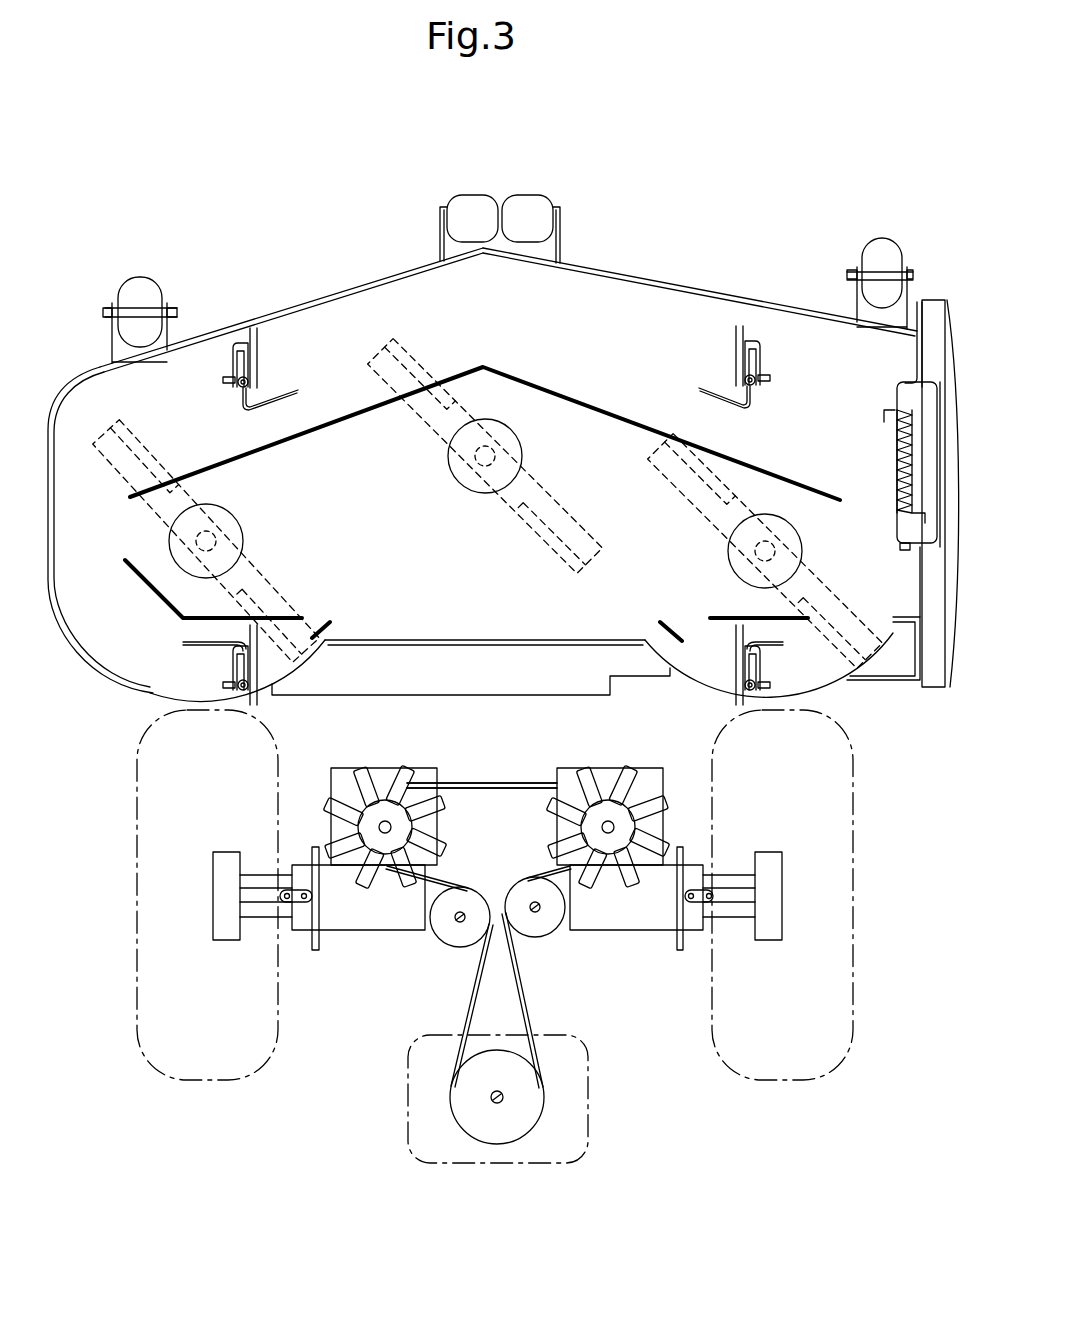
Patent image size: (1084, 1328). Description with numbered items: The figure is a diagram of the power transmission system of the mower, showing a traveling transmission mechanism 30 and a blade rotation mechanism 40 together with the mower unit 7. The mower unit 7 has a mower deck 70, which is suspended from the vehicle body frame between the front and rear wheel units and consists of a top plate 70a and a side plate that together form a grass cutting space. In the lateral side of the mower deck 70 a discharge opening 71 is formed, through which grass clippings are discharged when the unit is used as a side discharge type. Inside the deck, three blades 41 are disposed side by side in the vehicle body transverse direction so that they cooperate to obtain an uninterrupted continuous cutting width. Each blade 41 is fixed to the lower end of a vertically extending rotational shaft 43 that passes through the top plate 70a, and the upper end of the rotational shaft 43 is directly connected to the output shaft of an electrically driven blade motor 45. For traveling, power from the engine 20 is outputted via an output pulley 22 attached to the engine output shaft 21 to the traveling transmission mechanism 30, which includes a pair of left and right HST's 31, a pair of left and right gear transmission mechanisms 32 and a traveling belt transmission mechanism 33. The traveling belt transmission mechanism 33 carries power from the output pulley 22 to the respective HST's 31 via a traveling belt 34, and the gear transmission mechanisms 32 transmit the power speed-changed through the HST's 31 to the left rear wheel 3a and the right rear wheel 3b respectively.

The mower unit 7 is at (309, 278).
The mower deck 70 is at (599, 253).
The top plate 70a is at (667, 298).
The discharge opening 71 is at (941, 289).
The blade 41 is at (125, 437).
The blade rotation mechanism 40 is at (515, 400).
The rotational shaft 43 is at (222, 535).
The electrically driven blade motor 45 is at (245, 537).
The traveling transmission mechanism 30 is at (506, 777).
The HST 31 is at (375, 770).
The traveling belt 34 is at (453, 783).
The traveling belt transmission mechanism 33 is at (698, 805).
The gear transmission mechanism 32 is at (352, 922).
The engine output shaft 21 is at (494, 1096).
The output pulley 22 is at (525, 1102).
The engine 20 is at (507, 1163).
The left rear wheel 3a is at (138, 907).
The right rear wheel 3b is at (853, 933).